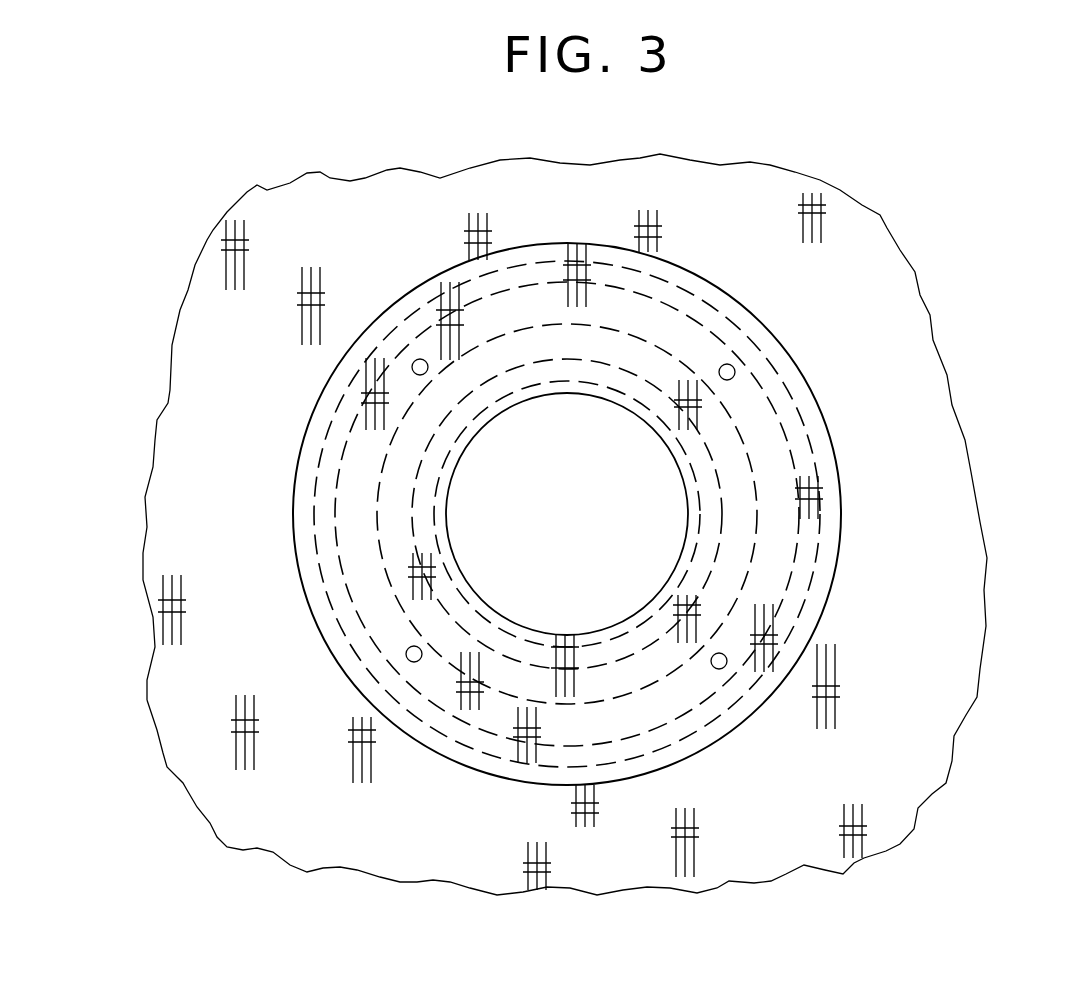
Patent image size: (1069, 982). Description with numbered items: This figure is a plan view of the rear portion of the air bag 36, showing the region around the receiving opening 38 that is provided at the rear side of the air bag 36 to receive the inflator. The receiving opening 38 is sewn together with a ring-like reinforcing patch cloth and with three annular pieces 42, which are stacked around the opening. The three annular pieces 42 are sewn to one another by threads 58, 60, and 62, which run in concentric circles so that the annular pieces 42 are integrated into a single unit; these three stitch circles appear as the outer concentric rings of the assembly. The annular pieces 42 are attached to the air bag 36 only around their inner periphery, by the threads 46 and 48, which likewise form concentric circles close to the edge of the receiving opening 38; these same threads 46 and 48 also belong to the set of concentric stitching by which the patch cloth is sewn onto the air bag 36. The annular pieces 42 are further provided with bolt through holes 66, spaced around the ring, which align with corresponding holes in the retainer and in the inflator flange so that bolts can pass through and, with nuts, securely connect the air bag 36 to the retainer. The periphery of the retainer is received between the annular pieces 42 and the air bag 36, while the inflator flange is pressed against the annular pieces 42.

The air bag 36 is at (950, 590).
The annular pieces 42 is at (693, 283).
The thread 62 is at (730, 320).
The thread 60 is at (743, 362).
The thread 58 is at (754, 474).
The thread 48 is at (667, 403).
The thread 46 is at (617, 393).
The receiving opening 38 is at (487, 605).
The bolt through holes 66 is at (719, 668).